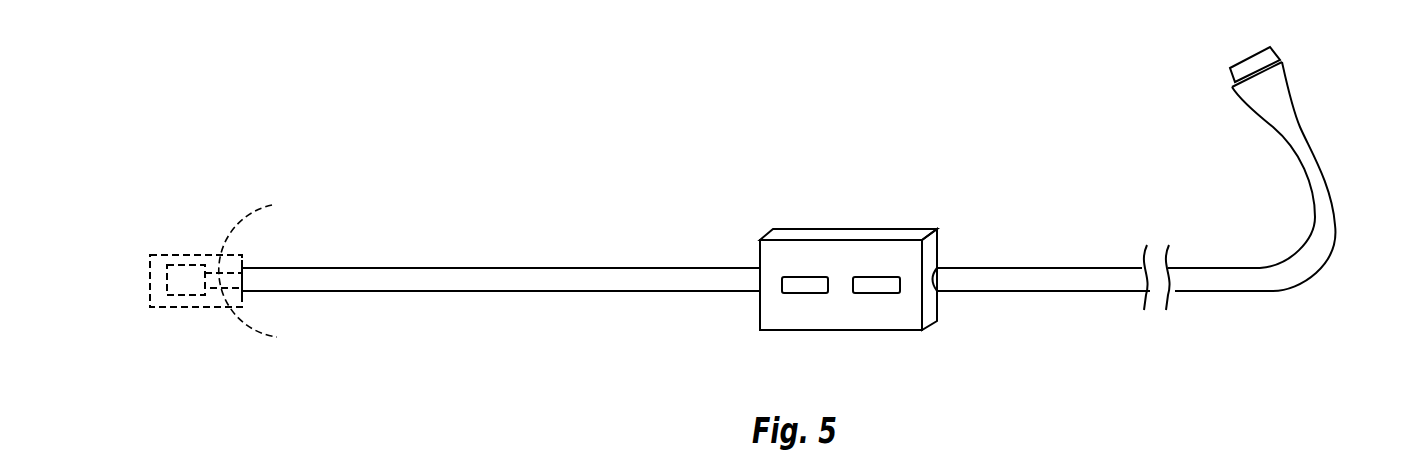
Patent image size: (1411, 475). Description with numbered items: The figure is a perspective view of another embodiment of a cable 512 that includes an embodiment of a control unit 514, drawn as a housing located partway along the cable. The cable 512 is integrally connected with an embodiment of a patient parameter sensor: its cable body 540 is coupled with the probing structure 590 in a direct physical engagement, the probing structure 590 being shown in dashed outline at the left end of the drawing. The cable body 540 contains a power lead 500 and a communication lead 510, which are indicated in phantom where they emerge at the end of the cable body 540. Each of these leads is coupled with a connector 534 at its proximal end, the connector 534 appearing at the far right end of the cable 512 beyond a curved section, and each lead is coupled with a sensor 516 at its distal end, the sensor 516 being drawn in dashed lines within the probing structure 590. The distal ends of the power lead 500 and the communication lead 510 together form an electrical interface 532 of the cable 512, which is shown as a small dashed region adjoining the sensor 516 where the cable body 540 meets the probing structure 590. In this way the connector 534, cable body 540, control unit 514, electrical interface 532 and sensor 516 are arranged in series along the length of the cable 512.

The power lead 500 is at (262, 215).
The communication lead 510 is at (262, 330).
The cable 512 is at (1291, 296).
The control unit 514 is at (958, 221).
The sensor 516 is at (174, 257).
The electrical interface 532 is at (204, 256).
The connector 534 is at (1265, 58).
The cable body 540 is at (390, 278).
The probing structure 590 is at (179, 324).